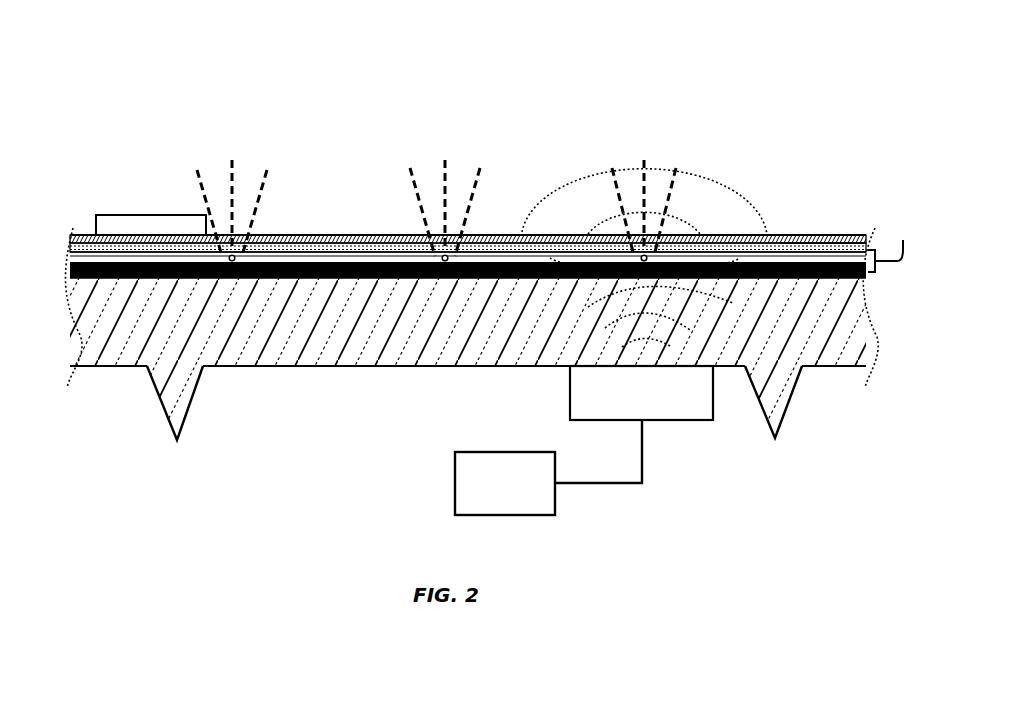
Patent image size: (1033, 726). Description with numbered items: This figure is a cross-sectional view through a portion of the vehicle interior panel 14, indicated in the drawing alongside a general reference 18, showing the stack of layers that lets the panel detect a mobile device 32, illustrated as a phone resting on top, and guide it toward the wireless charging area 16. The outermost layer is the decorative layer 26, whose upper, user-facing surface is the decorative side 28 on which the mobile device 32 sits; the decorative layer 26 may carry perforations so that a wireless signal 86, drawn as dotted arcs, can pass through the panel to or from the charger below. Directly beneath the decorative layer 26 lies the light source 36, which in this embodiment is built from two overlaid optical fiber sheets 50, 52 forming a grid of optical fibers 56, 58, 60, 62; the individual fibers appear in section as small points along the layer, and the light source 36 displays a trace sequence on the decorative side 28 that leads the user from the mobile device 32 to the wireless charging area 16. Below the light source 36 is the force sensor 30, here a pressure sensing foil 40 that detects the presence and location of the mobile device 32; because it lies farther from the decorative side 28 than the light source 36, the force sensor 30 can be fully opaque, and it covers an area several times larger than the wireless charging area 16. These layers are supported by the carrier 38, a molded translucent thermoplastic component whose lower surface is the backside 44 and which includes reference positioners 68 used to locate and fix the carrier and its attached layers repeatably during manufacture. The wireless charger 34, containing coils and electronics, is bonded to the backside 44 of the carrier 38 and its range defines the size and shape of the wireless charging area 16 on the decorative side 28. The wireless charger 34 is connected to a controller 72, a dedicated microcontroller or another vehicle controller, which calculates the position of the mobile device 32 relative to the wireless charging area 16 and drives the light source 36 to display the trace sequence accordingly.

The vehicle interior panel 14 is at (648, 46).
The sensor assembly 18 is at (700, 90).
The wireless charging area 16 is at (657, 180).
The wireless signal 86 is at (718, 203).
The mobile device 32 is at (120, 224).
The optical fiber sheet 52 is at (68, 240).
The optical fiber sheet 50 is at (68, 248).
The force sensor 30 is at (68, 270).
The pressure sensing foil 40 is at (65, 278).
The carrier 38 is at (88, 332).
The optical fiber 56 is at (237, 258).
The optical fiber 58 is at (450, 258).
The optical fiber 60 is at (648, 258).
The optical fiber 62 is at (343, 249).
The decorative layer 26 is at (780, 236).
The decorative side 28 is at (830, 236).
The light source 36 is at (897, 244).
The backside 44 is at (283, 367).
The reference positioners 68 is at (180, 425).
The wireless charger 34 is at (634, 424).
The controller 72 is at (505, 483).